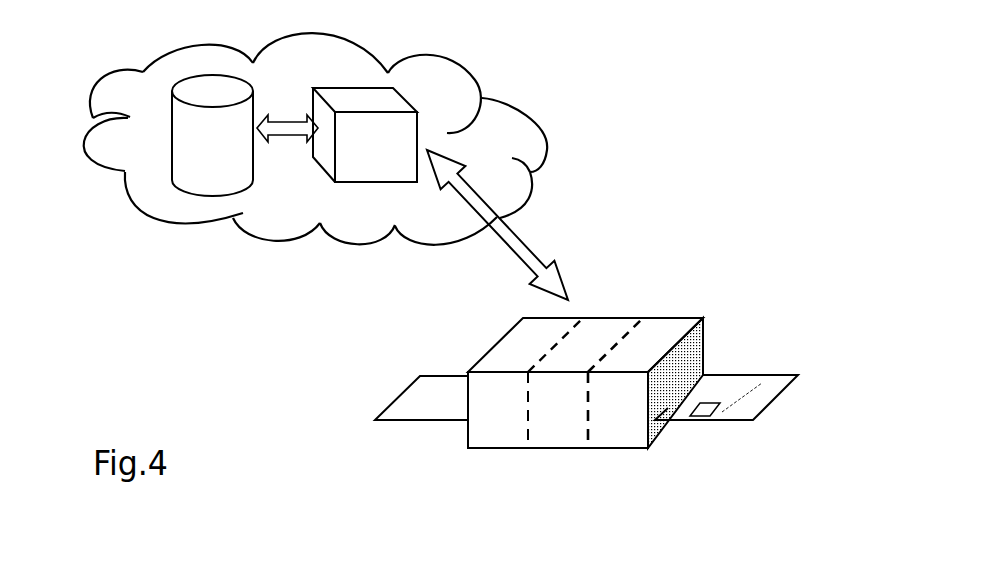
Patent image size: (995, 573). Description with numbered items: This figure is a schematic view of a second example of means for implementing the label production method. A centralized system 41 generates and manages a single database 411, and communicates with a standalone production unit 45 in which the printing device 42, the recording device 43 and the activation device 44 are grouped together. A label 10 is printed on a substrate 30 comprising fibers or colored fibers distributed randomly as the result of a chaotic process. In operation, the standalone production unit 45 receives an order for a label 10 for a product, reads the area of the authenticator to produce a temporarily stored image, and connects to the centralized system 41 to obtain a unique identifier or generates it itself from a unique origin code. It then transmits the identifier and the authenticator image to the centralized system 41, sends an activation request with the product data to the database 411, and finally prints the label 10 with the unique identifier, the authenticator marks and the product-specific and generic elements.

The label 10 is at (747, 354).
The substrate 30 is at (425, 400).
The centralized system 41 is at (376, 187).
The single database 411 is at (214, 80).
The label printing device 42 is at (540, 327).
The recording device 43 is at (602, 333).
The activation device 44 is at (672, 332).
The standalone production unit 45 is at (657, 452).